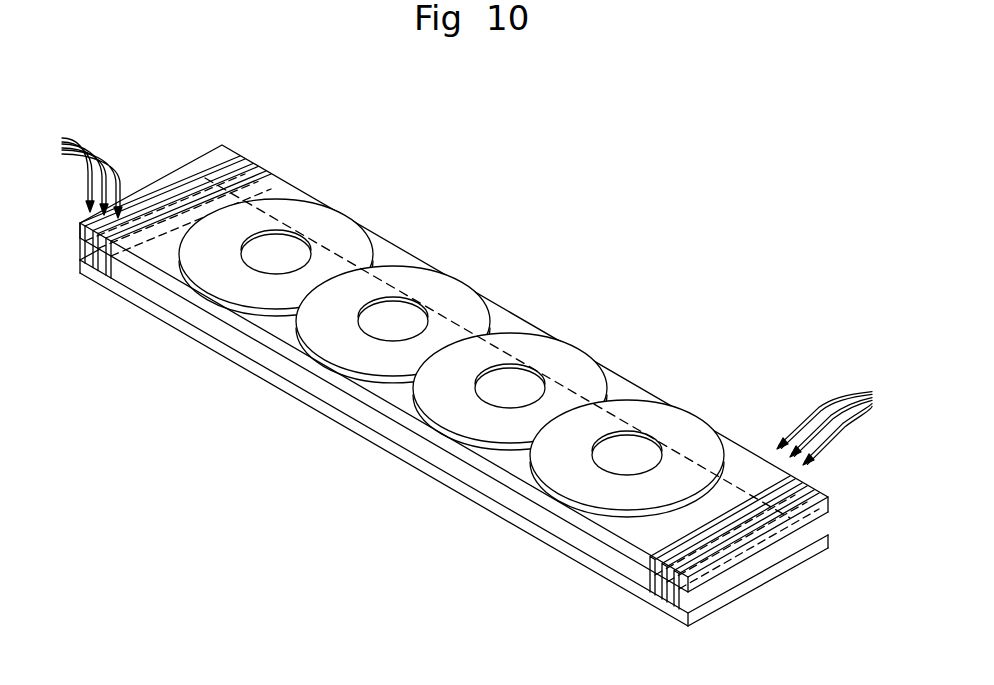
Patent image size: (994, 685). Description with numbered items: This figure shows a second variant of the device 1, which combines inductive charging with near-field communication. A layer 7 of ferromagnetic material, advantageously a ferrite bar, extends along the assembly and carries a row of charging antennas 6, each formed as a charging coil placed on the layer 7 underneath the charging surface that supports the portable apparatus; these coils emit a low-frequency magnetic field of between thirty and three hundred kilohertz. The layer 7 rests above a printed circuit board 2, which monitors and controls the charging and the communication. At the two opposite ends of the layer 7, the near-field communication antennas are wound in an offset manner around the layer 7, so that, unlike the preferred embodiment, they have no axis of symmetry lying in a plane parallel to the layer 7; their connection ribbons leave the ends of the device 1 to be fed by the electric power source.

The device 1 is at (806, 351).
The printed circuit board 2 is at (819, 544).
The charging antenna 6 is at (289, 205).
The layer of ferromagnetic material 7 is at (819, 505).